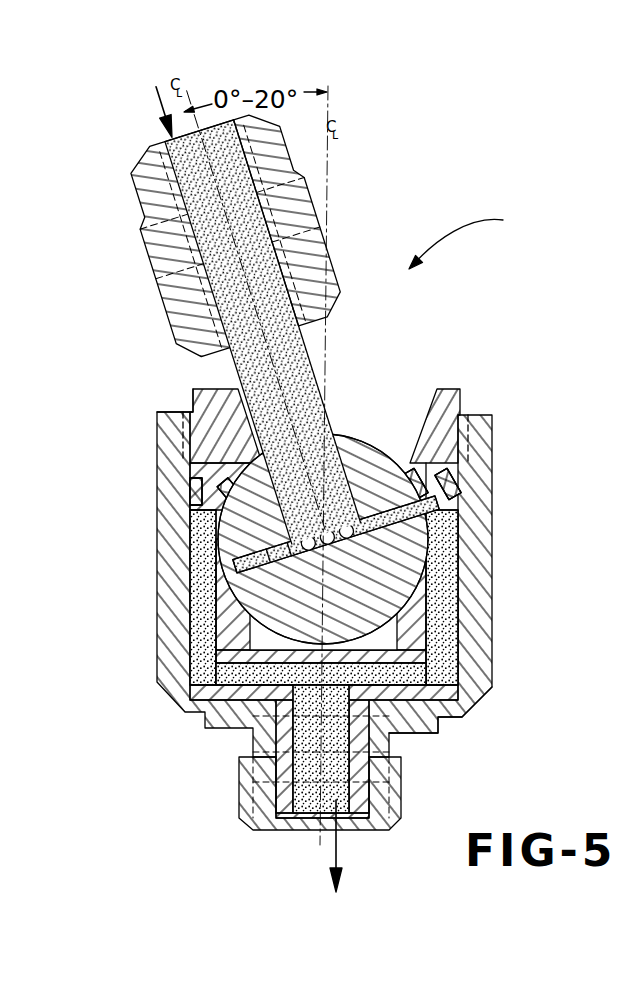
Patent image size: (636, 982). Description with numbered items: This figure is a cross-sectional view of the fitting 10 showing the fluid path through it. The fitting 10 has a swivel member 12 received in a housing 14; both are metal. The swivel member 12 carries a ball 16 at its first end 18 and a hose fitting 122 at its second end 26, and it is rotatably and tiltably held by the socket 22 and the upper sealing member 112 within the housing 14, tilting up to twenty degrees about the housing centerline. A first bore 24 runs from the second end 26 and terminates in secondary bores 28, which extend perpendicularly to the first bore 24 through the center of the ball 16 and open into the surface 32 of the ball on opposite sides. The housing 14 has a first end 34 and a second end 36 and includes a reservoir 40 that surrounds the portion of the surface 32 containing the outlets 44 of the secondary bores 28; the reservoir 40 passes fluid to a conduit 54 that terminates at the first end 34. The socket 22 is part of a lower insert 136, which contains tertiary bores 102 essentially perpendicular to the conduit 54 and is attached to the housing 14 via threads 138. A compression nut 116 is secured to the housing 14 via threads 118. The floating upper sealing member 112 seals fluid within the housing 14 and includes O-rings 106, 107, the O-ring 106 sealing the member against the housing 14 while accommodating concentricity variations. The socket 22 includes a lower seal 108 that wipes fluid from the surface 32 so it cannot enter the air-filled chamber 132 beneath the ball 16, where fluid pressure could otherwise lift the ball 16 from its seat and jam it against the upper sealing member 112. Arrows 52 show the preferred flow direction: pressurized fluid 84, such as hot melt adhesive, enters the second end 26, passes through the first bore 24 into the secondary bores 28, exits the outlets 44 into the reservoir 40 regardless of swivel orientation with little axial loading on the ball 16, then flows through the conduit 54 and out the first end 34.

The fitting 10 is at (472, 237).
The swivel member 12 is at (302, 345).
The housing 14 is at (477, 513).
The ball 16 is at (230, 530).
The first end 18 is at (370, 617).
The socket 22 is at (420, 653).
The first bore 24 is at (167, 142).
The second end 26 is at (137, 160).
The secondary bores 28 is at (370, 513).
The surface 32 is at (417, 577).
The first end 34 is at (262, 830).
The second end 36 is at (450, 390).
The reservoir 40 is at (197, 610).
The outlets 44 is at (423, 520).
The arrows 52 is at (157, 106).
The conduit 54 is at (307, 777).
The pressurized fluid 84 is at (187, 243).
The tertiary bores 102 is at (458, 695).
The O-ring 106 is at (197, 493).
The O-ring 107 is at (222, 492).
The lower seal 108 is at (232, 615).
The upper sealing member 112 is at (447, 473).
The compression nut 116 is at (203, 407).
The threads 118 is at (153, 412).
The hose fitting 122 is at (300, 203).
The chamber 132 is at (228, 668).
The lower insert 136 is at (283, 733).
The threads 138 is at (271, 778).